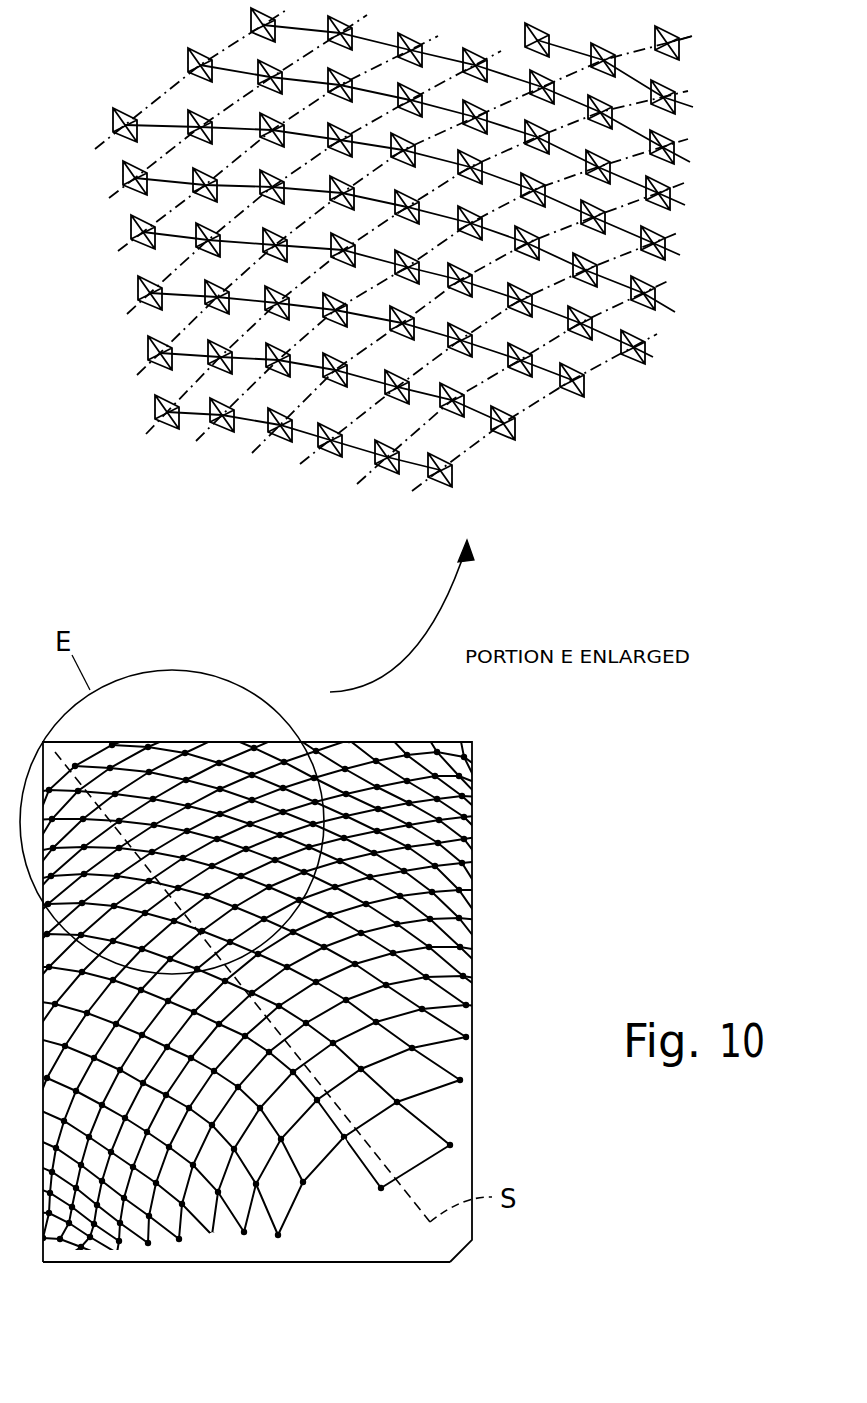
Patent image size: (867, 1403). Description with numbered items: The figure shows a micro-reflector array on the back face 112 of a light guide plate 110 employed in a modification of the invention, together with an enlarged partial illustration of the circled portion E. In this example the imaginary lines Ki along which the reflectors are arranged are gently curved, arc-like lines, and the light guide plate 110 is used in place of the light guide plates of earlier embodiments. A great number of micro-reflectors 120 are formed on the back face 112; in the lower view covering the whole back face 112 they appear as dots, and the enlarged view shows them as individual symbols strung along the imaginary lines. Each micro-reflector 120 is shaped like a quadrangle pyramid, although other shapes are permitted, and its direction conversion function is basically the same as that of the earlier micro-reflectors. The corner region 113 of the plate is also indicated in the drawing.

The light guide plate 110 is at (192, 1263).
The back face 112 is at (455, 958).
The edge of object 113 is at (482, 1259).
The micro-reflector 120 is at (630, 357).